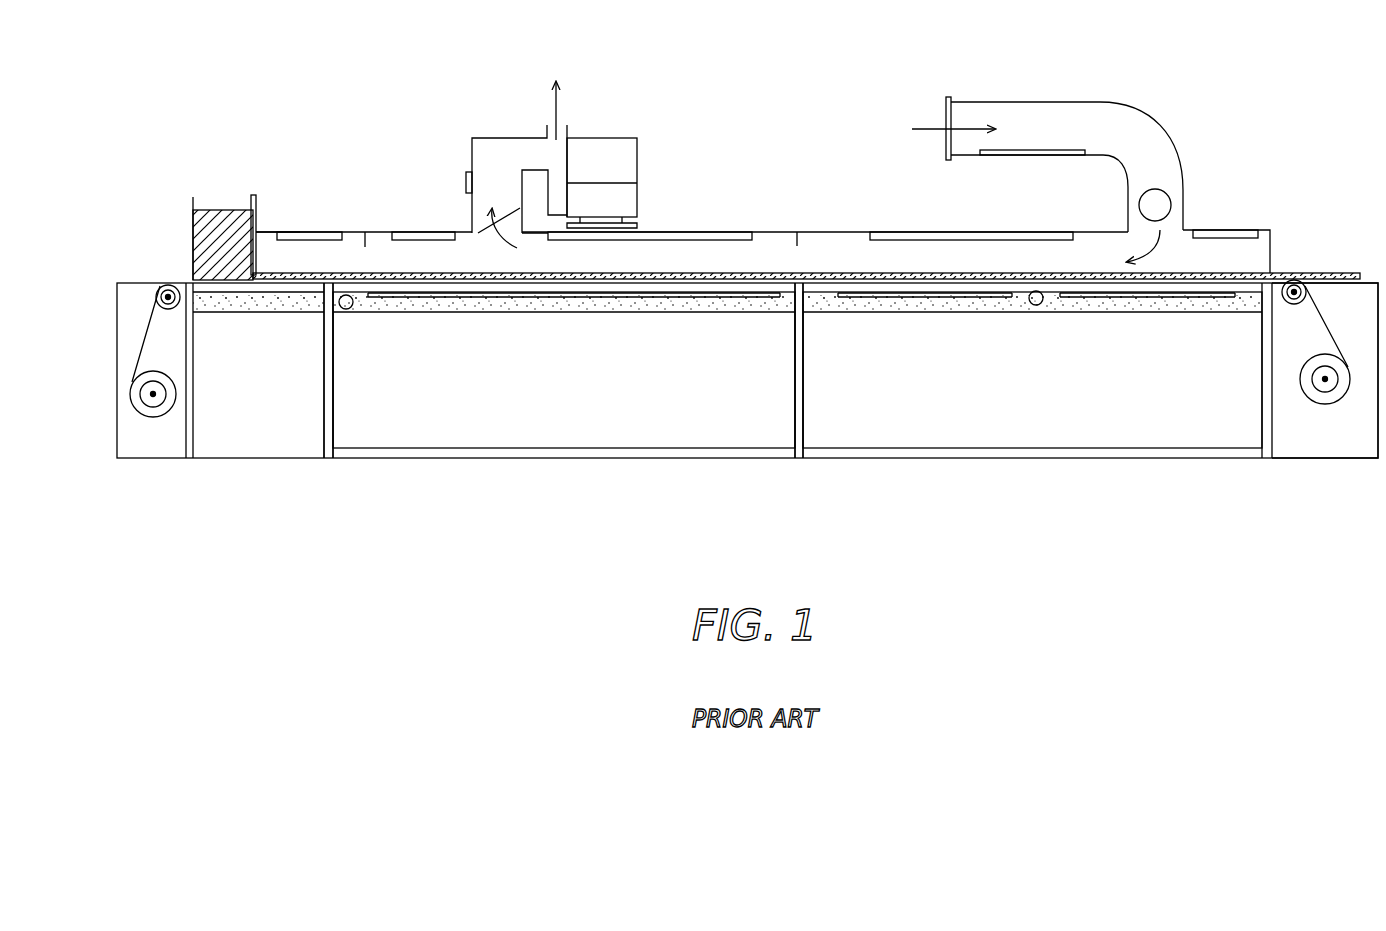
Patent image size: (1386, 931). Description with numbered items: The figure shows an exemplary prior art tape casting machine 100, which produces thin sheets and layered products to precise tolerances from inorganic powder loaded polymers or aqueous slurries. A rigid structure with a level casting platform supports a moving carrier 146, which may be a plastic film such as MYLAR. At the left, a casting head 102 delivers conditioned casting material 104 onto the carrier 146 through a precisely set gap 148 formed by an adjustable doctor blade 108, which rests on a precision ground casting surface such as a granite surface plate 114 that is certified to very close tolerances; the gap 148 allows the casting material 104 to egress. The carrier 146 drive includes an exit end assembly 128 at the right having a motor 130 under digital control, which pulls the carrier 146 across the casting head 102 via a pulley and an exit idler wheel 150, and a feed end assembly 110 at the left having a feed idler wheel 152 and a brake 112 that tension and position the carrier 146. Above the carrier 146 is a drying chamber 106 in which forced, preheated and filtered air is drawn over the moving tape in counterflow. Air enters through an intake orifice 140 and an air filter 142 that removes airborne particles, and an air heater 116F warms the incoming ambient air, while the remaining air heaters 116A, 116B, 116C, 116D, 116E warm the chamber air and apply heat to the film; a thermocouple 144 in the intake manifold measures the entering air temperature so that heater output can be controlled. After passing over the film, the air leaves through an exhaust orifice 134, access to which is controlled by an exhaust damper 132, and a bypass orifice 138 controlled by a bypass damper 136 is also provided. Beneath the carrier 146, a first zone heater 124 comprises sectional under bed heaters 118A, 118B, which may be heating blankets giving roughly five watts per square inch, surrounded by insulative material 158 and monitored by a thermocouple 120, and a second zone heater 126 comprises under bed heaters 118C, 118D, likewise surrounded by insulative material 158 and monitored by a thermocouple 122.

The tape casting machine 100 is at (742, 136).
The casting head 102 is at (192, 250).
The casting material 104 is at (230, 210).
The drying chamber 106 is at (812, 252).
The adjustable doctor blade 108 is at (256, 208).
The feed end assembly 110 is at (135, 435).
The brake 112 is at (160, 415).
The granite surface plate 114 is at (232, 312).
The air heater 116A is at (305, 233).
The air heater 116B is at (420, 232).
The air heater 116C is at (695, 233).
The air heater 116D is at (970, 232).
The air heater 116E is at (1222, 232).
The air heater 116F is at (1032, 157).
The sectional under bed heater 118A is at (455, 300).
The sectional under bed heater 118B is at (643, 300).
The sectional under bed heater 118C is at (905, 300).
The sectional under bed heater 118D is at (1100, 300).
The thermocouple 120 is at (350, 308).
The thermocouple 122 is at (1036, 305).
The first zone heater 124 is at (622, 400).
The second zone heater 126 is at (1000, 395).
The exit end assembly 128 is at (1303, 427).
The motor 130 is at (1340, 400).
The exhaust damper 132 is at (483, 217).
The exhaust orifice 134 is at (562, 110).
The bypass damper 136 is at (470, 172).
The bypass orifice 138 is at (472, 160).
The intake orifice 140 is at (925, 118).
The air filter 142 is at (946, 150).
The thermocouple 144 is at (1168, 190).
The carrier 146 is at (148, 325).
The gap 148 is at (285, 212).
The exit idler wheel 150 is at (1290, 305).
The feed idler wheel 152 is at (158, 284).
The insulative material 158 is at (775, 300).